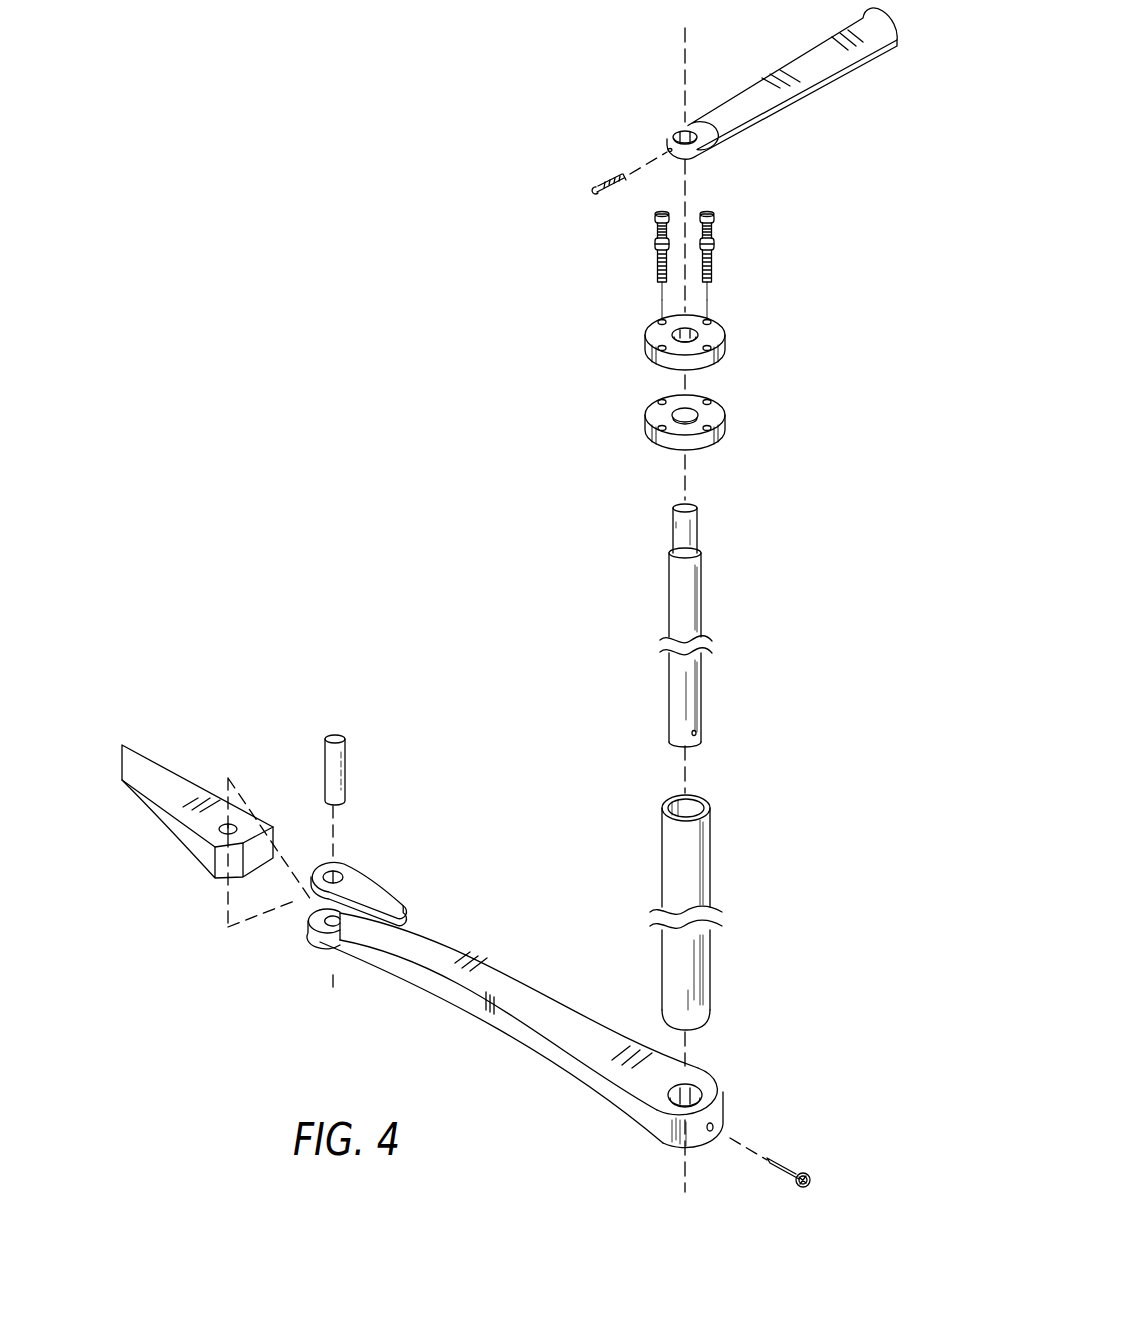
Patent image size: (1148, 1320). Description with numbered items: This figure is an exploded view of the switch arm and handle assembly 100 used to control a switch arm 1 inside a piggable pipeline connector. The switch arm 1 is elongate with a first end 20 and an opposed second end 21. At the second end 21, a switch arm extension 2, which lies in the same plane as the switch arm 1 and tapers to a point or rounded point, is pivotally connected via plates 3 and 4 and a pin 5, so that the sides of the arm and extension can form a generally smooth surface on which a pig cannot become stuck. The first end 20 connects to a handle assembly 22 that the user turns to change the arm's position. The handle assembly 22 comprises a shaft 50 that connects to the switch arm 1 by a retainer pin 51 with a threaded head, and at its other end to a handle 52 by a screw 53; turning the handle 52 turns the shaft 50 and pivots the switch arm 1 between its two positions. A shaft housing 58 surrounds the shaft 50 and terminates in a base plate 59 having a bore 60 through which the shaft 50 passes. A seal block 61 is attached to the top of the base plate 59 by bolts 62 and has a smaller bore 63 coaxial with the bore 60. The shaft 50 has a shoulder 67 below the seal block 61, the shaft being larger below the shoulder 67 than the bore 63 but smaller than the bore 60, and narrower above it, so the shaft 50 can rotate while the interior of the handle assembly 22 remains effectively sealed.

The handle assembly 100 is at (410, 450).
The switch arm 1 is at (448, 935).
The switch arm extension 2 is at (172, 773).
The plate 3 is at (372, 892).
The plate 4 is at (330, 945).
The pin 5 is at (330, 760).
The first end 20 is at (662, 1127).
The second end 21 is at (365, 938).
The handle assembly 22 is at (789, 668).
The shaft 50 is at (693, 608).
The retainer pin 51 is at (785, 1163).
The handle 52 is at (807, 63).
The screw 53 is at (610, 177).
The shaft housing 58 is at (698, 848).
The base plate 59 is at (715, 415).
The bore 60 is at (690, 413).
The seal block 61 is at (715, 335).
The bolts 62 is at (712, 265).
The bore 63 is at (690, 330).
The shoulder 67 is at (678, 554).